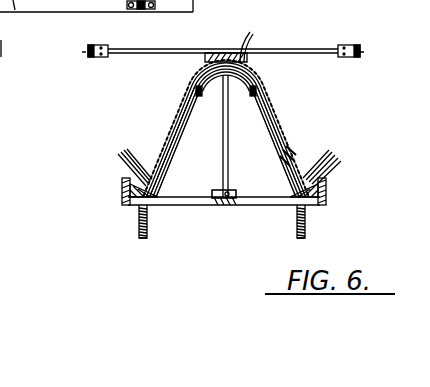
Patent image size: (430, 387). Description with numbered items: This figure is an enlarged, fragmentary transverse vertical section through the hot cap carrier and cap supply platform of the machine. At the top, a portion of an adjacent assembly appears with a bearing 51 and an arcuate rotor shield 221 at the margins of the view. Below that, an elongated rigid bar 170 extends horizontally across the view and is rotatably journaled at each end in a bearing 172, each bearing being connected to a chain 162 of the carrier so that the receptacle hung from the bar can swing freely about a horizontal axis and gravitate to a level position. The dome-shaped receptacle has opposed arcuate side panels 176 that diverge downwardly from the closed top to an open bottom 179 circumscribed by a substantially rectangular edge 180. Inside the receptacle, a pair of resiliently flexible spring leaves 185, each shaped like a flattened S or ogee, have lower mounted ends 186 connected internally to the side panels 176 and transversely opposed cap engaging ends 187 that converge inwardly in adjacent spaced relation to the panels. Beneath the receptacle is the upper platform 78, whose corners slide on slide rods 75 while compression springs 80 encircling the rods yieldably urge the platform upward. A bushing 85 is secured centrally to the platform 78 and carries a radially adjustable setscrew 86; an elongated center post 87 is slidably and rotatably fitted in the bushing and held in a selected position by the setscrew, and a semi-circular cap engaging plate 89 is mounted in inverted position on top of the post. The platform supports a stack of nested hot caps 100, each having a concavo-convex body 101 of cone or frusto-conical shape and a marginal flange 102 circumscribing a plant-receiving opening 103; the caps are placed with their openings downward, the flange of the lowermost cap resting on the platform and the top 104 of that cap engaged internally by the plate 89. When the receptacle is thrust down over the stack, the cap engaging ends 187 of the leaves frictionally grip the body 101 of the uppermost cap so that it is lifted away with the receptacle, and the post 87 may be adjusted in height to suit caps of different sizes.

The rotor shield 221 is at (20, 19).
The bearing 51 is at (140, 12).
The chain 162 is at (362, 52).
The bearing 172 is at (343, 46).
The bar 170 is at (295, 50).
The top of lowermost cap 104 is at (244, 40).
The cap engaging end 187 is at (190, 86).
The side panel 176 is at (280, 111).
The spring leaf 185 is at (277, 108).
The hot cap 100 is at (287, 128).
The body 101 is at (308, 128).
The marginal flange 102 is at (334, 160).
The cap engaging plate 89 is at (208, 92).
The center post 87 is at (229, 140).
The mounted end 186 is at (150, 153).
The bushing 85 is at (240, 175).
The setscrew 86 is at (222, 205).
The platform 78 is at (122, 188).
The edge 180 is at (322, 205).
The slide rod 75 is at (306, 236).
The compression spring 80 is at (303, 238).
The open bottom 179 is at (280, 232).
The plant-receiving opening 103 is at (163, 188).